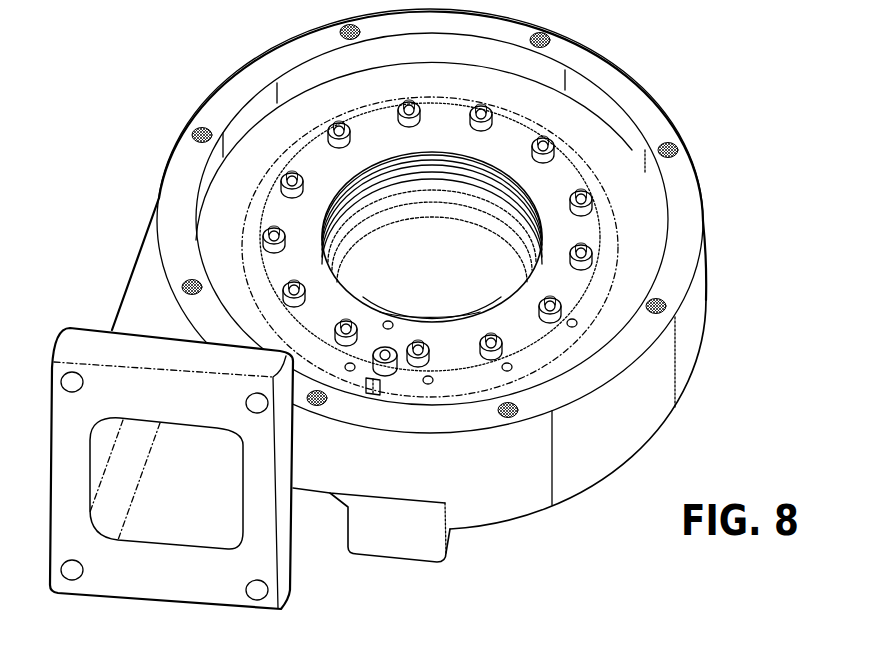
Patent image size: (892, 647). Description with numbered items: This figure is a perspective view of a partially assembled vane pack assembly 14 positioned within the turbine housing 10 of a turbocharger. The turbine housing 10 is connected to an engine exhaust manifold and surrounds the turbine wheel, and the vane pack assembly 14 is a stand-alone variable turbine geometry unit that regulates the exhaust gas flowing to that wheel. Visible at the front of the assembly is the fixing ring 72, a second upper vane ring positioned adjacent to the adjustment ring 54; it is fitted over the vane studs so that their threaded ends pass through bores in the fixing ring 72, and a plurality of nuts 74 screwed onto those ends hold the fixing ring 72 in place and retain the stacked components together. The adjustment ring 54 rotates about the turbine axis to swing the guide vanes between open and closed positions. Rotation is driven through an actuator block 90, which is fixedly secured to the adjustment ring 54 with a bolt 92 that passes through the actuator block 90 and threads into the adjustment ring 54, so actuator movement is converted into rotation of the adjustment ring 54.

The turbine housing 10 is at (404, 306).
The vane pack assembly 14 is at (593, 150).
The adjustment ring 54 is at (620, 220).
The fixing ring 72 is at (307, 165).
The nuts 74 is at (338, 126).
The actuator block 90 is at (362, 393).
The bolt 92 is at (397, 385).